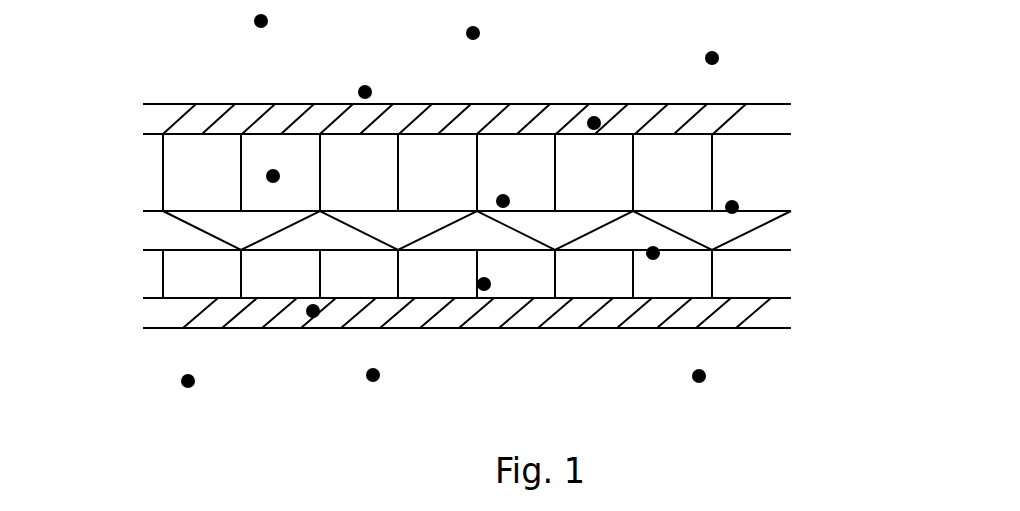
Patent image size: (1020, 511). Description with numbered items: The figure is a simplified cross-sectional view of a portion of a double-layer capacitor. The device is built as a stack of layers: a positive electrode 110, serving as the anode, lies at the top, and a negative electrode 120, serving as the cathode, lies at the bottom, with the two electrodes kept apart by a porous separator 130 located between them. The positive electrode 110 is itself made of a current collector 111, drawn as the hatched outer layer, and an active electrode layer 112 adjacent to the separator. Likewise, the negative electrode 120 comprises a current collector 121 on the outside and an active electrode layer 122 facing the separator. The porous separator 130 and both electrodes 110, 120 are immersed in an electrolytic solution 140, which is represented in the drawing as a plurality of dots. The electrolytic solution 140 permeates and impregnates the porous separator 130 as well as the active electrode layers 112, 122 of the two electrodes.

The positive electrode 110 is at (452, 156).
The current collector 111 is at (794, 114).
The active electrode layer 112 is at (804, 173).
The negative electrode 120 is at (452, 289).
The current collector 121 is at (792, 314).
The active electrode layer 122 is at (792, 276).
The porous separator 130 is at (792, 230).
The electrolytic solution 140 is at (724, 46).